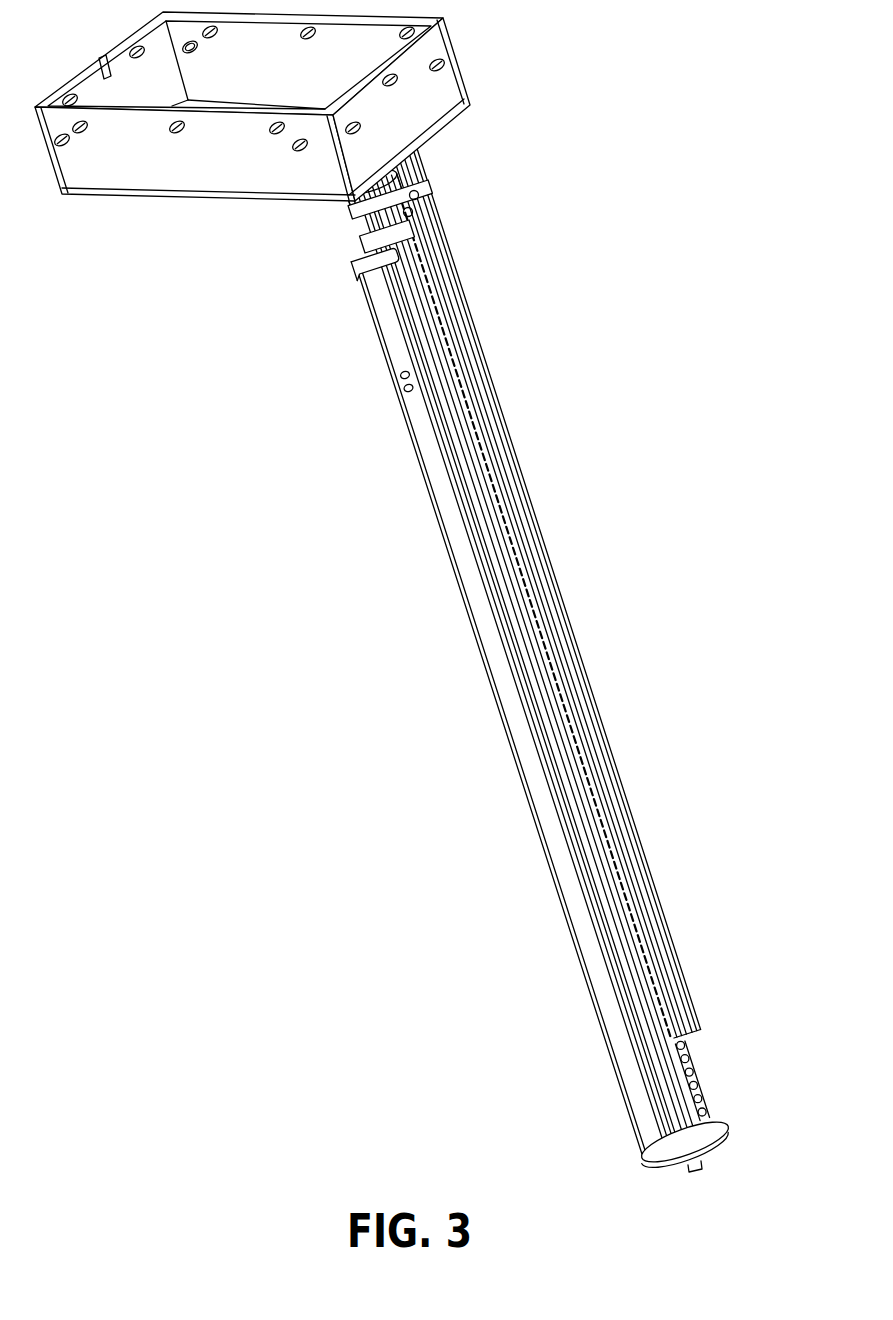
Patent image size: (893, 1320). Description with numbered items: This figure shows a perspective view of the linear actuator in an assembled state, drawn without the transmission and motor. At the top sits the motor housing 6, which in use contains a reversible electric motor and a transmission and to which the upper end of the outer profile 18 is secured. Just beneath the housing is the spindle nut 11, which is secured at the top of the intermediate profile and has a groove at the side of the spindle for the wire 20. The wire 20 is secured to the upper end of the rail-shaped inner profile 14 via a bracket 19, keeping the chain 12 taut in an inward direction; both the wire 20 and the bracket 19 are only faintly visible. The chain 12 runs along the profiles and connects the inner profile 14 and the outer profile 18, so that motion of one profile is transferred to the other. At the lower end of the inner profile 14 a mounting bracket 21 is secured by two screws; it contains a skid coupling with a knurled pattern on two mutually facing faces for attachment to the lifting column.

The motor housing 6 is at (140, 178).
The spindle nut 11 is at (363, 217).
The chain 12 is at (698, 1062).
The inner profile 14 is at (530, 797).
The outer profile 18 is at (555, 588).
The bracket 19 is at (380, 278).
The wire 20 is at (378, 245).
The mounting bracket 21 is at (722, 1152).